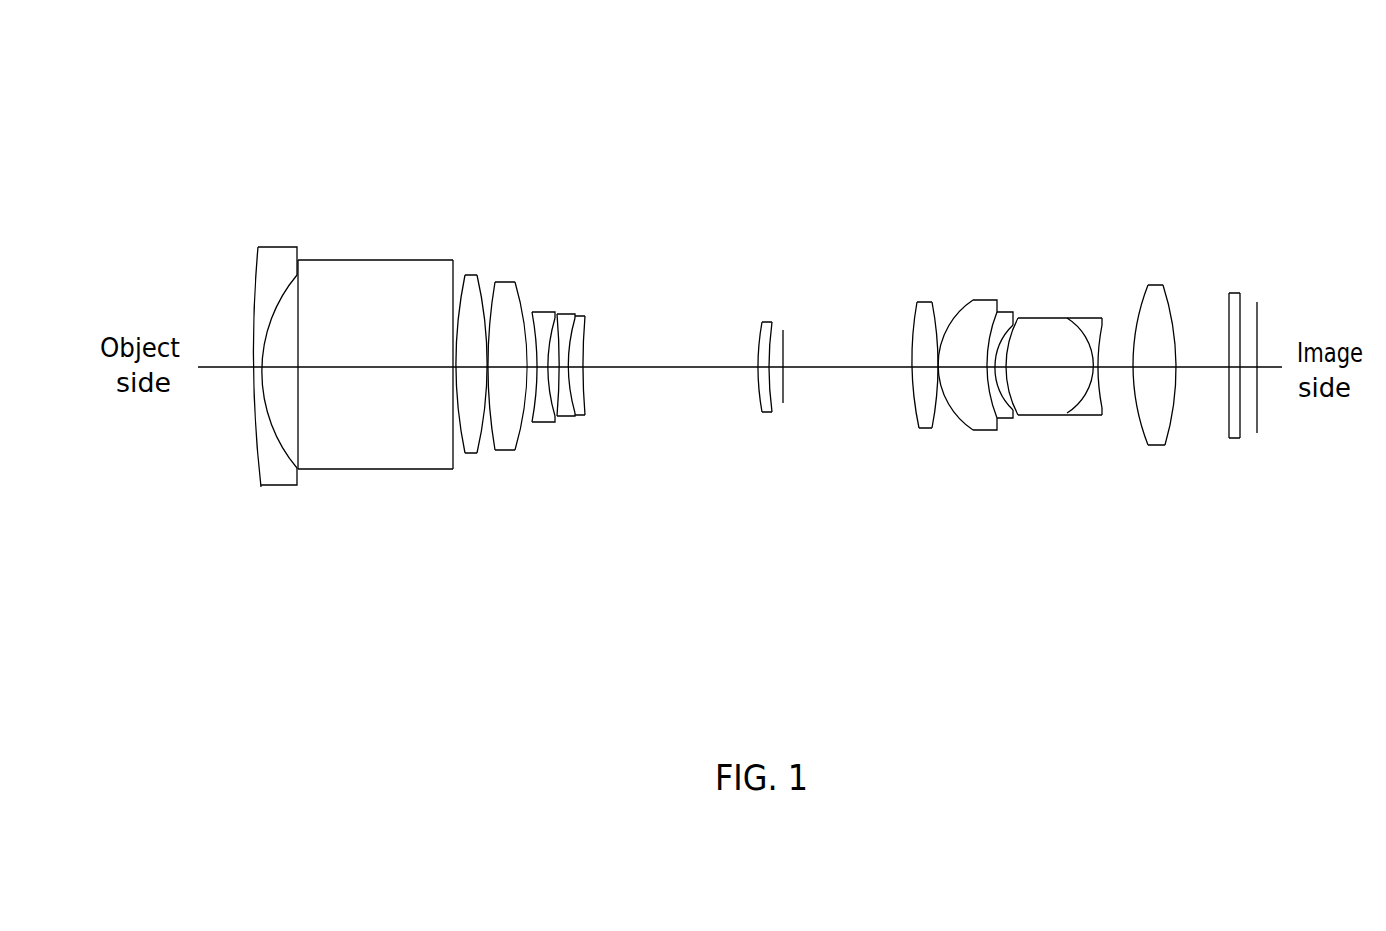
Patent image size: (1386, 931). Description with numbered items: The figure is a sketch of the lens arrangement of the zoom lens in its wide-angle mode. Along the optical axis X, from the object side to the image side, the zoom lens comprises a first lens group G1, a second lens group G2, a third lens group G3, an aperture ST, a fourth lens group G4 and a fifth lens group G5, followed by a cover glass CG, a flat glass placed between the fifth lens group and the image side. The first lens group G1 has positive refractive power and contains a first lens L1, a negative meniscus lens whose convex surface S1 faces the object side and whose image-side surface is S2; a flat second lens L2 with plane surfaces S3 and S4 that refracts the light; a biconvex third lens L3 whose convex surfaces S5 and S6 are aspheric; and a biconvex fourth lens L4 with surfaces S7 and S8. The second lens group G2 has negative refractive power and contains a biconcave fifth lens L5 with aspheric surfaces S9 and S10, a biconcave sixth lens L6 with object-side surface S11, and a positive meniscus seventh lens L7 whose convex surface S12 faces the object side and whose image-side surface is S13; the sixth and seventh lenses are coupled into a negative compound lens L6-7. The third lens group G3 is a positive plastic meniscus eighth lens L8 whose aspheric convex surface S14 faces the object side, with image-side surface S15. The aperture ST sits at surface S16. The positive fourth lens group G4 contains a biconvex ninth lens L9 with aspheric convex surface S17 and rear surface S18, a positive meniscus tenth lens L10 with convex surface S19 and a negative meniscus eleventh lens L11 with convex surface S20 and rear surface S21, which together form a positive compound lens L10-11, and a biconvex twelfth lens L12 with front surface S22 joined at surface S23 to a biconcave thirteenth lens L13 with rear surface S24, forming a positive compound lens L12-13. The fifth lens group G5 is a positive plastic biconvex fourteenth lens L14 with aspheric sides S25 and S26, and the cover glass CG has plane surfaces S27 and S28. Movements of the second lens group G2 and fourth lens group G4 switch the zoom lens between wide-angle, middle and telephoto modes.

The optical axis X is at (224, 366).
The convex surface of first lens S1 is at (256, 270).
The image-side surface of first lens S2 is at (285, 275).
The object-side surface of second lens S3 is at (298, 300).
The image-side surface of second lens S4 is at (453, 292).
The convex surface of third lens S5 is at (463, 275).
The convex surface of third lens S6 is at (484, 300).
The object-side surface of fourth lens S7 is at (496, 285).
The image-side surface of fourth lens S8 is at (527, 345).
The surface of fifth lens S9 is at (532, 310).
The surface of fifth lens S10 is at (555, 315).
The object-side surface of sixth lens S11 is at (568, 322).
The convex surface of seventh lens S12 is at (584, 324).
The image-side surface of seventh lens S13 is at (586, 345).
The convex surface of eighth lens S14 is at (761, 337).
The image-side surface of eighth lens S15 is at (776, 338).
The aperture surface S16 is at (784, 343).
The convex surface of ninth lens S17 is at (915, 330).
The image-side surface of ninth lens S18 is at (918, 302).
The convex surface of tenth lens S19 is at (960, 308).
The convex surface of eleventh lens S20 is at (996, 313).
The image-side surface of eleventh lens S21 is at (1004, 318).
The object-side surface of twelfth lens S22 is at (1014, 338).
The cemented surface of twelfth and thirteenth lenses S23 is at (1097, 333).
The image-side surface of thirteenth lens S24 is at (1101, 337).
The convex side of fourteenth lens S25 is at (1133, 340).
The convex side of fourteenth lens S26 is at (1167, 298).
The object-side surface of cover glass S27 is at (1229, 323).
The image-side surface of cover glass S28 is at (1241, 300).
The first lens L1 is at (245, 339).
The second lens L2 is at (375, 372).
The third lens L3 is at (459, 344).
The fourth lens L4 is at (516, 310).
The fifth lens L5 is at (570, 363).
The sixth lens L6 is at (621, 355).
The seventh lens L7 is at (650, 385).
The compound lens L6-7 is at (641, 378).
The eighth lens L8 is at (776, 385).
The ninth lens L9 is at (893, 385).
The tenth lens L10 is at (950, 349).
The eleventh lens L11 is at (1010, 356).
The compound lens L10-11 is at (971, 372).
The twelfth lens L12 is at (1058, 379).
The thirteenth lens L13 is at (1116, 376).
The compound lens L12-13 is at (1074, 400).
The fourteenth lens L14 is at (1166, 374).
The first lens group G1 is at (369, 334).
The second lens group G2 is at (627, 387).
The third lens group G3 is at (776, 409).
The fourth lens group G4 is at (993, 395).
The fifth lens group G5 is at (1166, 398).
The aperture ST is at (814, 306).
The cover glass CG is at (1229, 362).